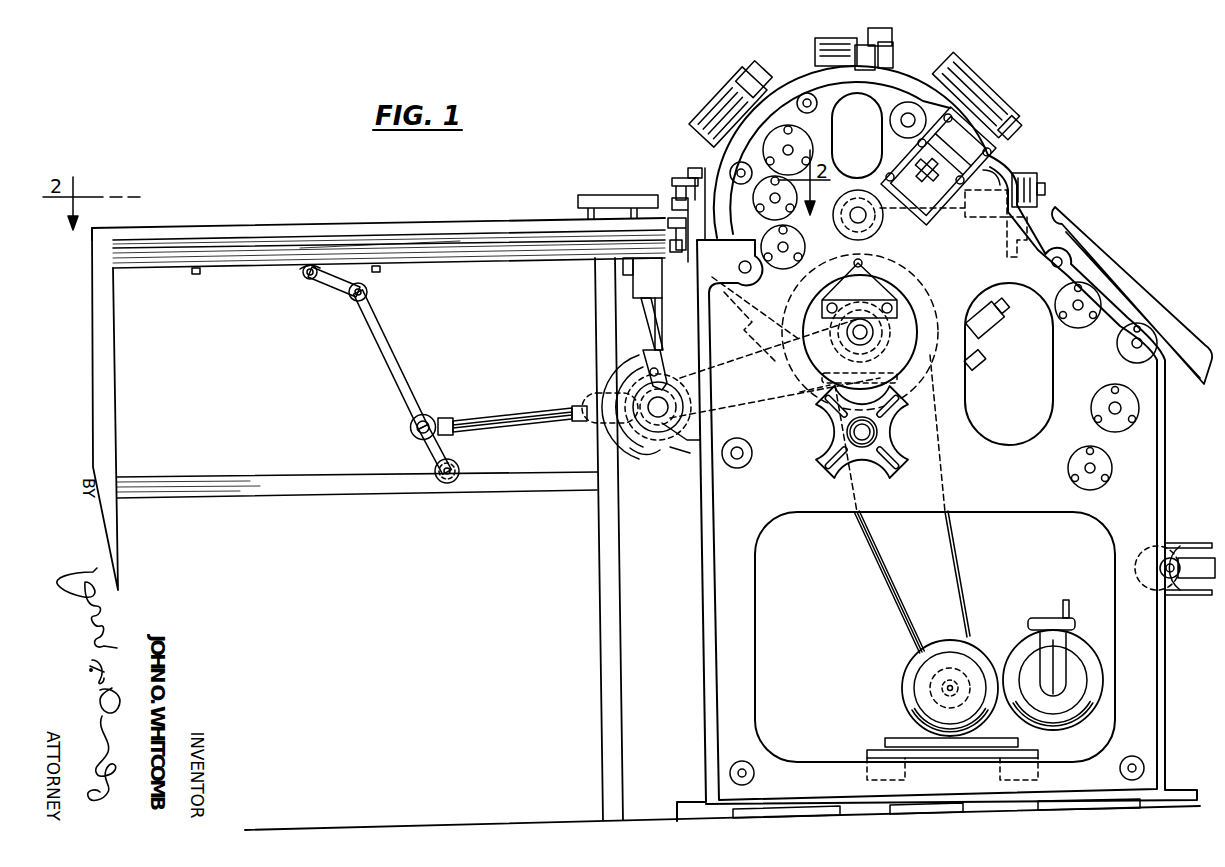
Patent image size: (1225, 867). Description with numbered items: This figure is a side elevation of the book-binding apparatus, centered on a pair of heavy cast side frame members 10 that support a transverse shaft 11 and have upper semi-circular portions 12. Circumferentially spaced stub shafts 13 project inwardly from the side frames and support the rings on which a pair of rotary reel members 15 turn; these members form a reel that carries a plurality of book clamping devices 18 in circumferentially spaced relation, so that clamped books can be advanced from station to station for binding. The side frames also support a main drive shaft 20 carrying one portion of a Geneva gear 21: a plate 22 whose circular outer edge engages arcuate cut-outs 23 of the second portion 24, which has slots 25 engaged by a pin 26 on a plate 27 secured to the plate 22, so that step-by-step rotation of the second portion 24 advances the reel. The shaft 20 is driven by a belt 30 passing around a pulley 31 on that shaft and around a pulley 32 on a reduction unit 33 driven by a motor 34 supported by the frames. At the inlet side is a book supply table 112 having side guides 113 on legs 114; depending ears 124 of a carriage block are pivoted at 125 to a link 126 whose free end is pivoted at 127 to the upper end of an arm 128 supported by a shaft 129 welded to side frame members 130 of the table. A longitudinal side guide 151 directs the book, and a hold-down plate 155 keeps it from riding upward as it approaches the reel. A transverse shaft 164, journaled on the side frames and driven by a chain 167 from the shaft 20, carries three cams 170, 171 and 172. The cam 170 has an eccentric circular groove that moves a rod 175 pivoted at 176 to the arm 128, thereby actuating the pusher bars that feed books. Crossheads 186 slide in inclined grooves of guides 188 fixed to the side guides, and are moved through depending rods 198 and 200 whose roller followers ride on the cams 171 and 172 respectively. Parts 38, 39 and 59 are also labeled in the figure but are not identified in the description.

The side frame members 10 is at (1167, 412).
The transverse shaft 11 is at (888, 230).
The upper semi-circular portions 12 is at (886, 92).
The stub shafts 13 is at (889, 119).
The rotary reel members 15 is at (803, 86).
The book clamping devices 18 is at (710, 102).
The main drive shaft 20 is at (905, 296).
The Geneva gear 21 is at (874, 332).
The plate 22 is at (822, 378).
The arcuate cut-outs 23 is at (823, 433).
The second portion of the Geneva gear 24 is at (906, 440).
The slots 25 is at (808, 471).
The pin 26 is at (862, 222).
The plate 27 is at (882, 290).
The belt 30 is at (888, 598).
The pulley 31 is at (842, 262).
The pulley 32 is at (930, 690).
The reduction unit 33 is at (905, 663).
The motor 34 is at (1095, 662).
The stop member 38 is at (702, 182).
The clamp assembly 39 is at (676, 191).
The holder outline 59 is at (993, 226).
The book supply table 112 is at (265, 220).
The side guides 113 is at (460, 258).
The legs 114 is at (117, 560).
The depending ears 124 is at (304, 277).
The pivot 125 is at (308, 280).
The link 126 is at (338, 300).
The pivot 127 is at (358, 303).
The arm 128 is at (398, 374).
The shaft 129 is at (452, 463).
The side frame members 130 is at (396, 492).
The side guide 151 is at (462, 219).
The hold-down plate 155 is at (606, 195).
The transverse shaft 164 is at (654, 448).
The chain 167 is at (800, 395).
The cam 170 is at (614, 405).
The cam 171 is at (646, 362).
The cam 172 is at (666, 445).
The rod 175 is at (487, 419).
The pivot 176 is at (430, 414).
The crosshead 186 is at (636, 292).
The guides 188 is at (624, 268).
The depending rod 198 is at (662, 322).
The depending rod 200 is at (642, 318).